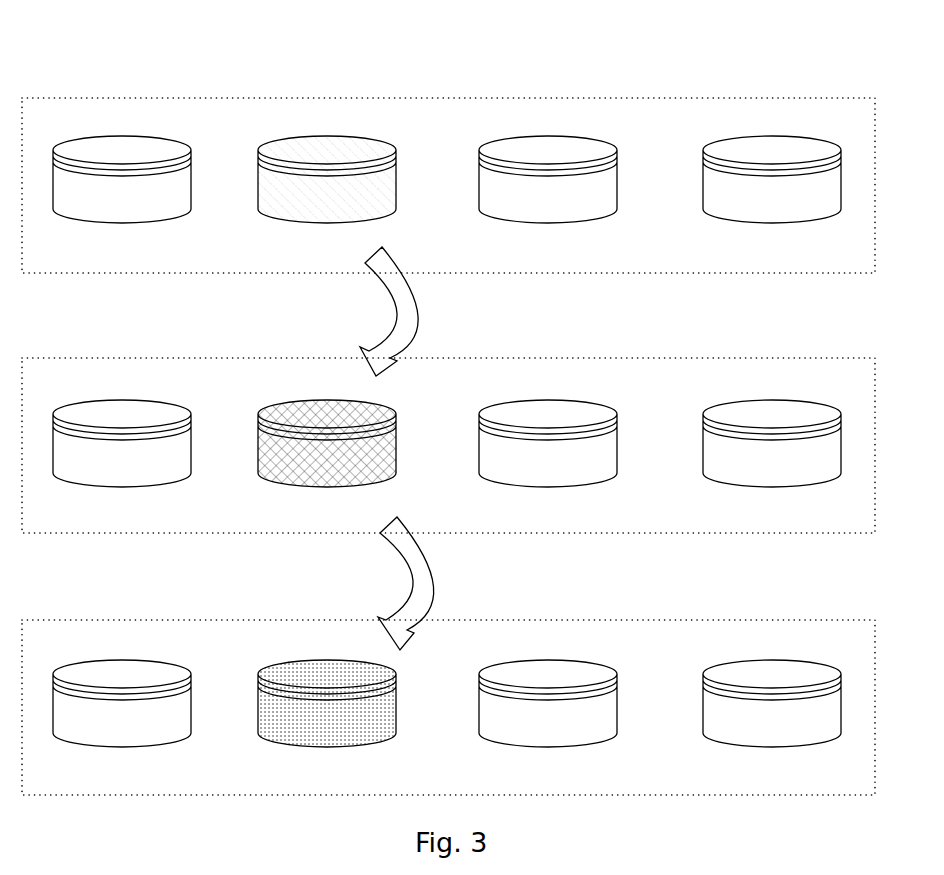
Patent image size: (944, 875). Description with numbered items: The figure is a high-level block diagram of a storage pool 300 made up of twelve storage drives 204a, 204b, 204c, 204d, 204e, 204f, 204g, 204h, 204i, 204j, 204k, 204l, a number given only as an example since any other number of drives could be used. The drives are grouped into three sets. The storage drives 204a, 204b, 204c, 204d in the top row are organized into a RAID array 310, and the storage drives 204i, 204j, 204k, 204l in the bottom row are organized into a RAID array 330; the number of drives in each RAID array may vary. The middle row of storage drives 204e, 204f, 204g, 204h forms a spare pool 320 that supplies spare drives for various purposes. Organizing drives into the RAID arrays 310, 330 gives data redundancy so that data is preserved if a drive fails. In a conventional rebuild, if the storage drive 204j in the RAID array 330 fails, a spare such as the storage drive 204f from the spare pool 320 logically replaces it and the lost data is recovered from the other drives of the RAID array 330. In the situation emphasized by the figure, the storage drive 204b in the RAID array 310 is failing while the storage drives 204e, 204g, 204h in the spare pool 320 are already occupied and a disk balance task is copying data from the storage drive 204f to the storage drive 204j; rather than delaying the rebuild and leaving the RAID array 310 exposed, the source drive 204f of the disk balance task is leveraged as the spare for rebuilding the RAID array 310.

The storage pool 300 is at (686, 36).
The RAID array 310 is at (722, 98).
The spare pool 320 is at (732, 360).
The RAID array 330 is at (732, 620).
The storage drive 204a is at (122, 179).
The storage drive 204b is at (327, 179).
The storage drive 204c is at (548, 179).
The storage drive 204d is at (772, 179).
The storage drive 204e is at (122, 443).
The storage drive 204f is at (327, 443).
The storage drive 204g is at (548, 443).
The storage drive 204h is at (772, 443).
The storage drive 204i is at (122, 703).
The storage drive 204j is at (327, 703).
The storage drive 204k is at (548, 703).
The storage drive 204l is at (772, 703).